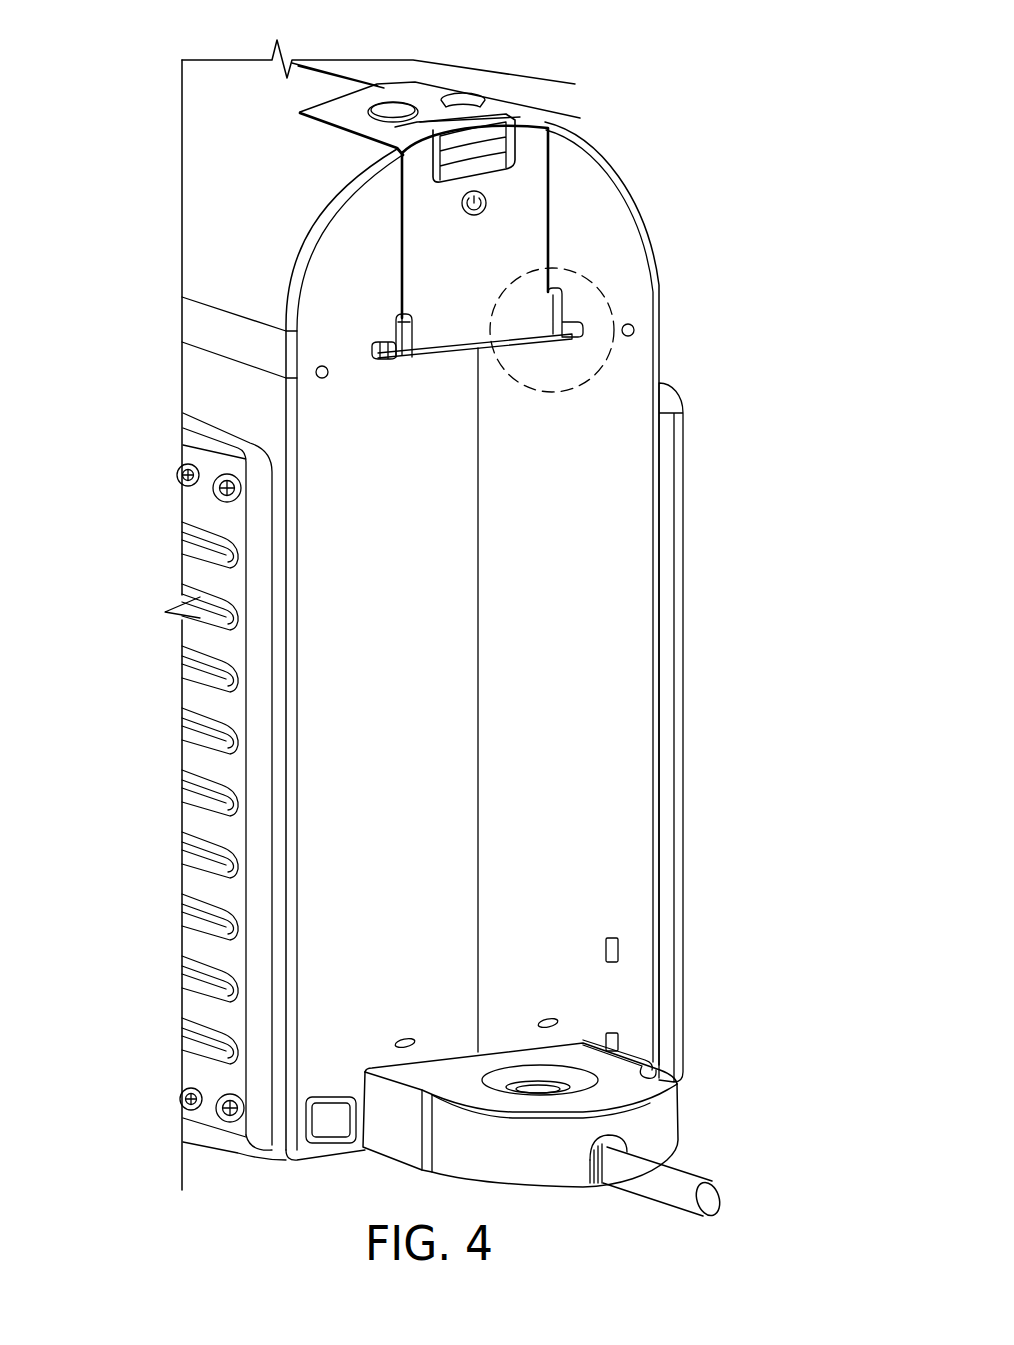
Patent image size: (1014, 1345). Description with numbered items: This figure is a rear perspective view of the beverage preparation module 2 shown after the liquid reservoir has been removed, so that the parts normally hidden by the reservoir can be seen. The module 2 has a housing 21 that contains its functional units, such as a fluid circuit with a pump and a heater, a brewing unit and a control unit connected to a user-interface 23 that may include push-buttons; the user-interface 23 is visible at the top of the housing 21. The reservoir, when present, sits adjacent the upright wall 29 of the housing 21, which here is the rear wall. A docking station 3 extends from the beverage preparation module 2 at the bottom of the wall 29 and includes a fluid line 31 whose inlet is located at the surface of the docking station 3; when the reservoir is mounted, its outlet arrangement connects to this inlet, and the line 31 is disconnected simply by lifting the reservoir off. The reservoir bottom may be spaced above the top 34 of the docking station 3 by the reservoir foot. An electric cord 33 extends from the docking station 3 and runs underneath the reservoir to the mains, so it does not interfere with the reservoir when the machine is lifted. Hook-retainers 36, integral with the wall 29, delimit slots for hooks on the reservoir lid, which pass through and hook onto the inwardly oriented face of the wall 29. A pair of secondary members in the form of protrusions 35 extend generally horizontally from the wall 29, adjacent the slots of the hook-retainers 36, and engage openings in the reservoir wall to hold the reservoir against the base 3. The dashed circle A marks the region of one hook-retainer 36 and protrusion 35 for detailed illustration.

The beverage preparation module 2 is at (160, 56).
The docking station 3 is at (668, 1113).
The housing 21 is at (648, 234).
The user-interface 23 is at (428, 95).
The upright wall 29 is at (642, 685).
The fluid line 31 is at (530, 1058).
The cord 33 is at (658, 1192).
The top 34 is at (640, 1077).
The protrusions 35 is at (379, 364).
The hook-retainers 36 is at (408, 327).
The detail region A is at (613, 312).